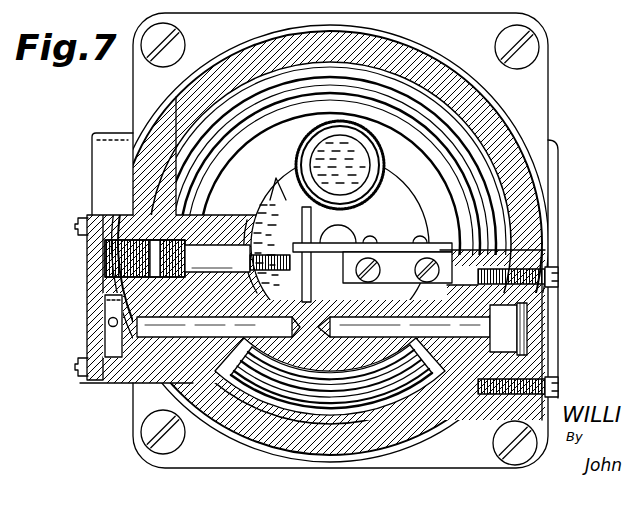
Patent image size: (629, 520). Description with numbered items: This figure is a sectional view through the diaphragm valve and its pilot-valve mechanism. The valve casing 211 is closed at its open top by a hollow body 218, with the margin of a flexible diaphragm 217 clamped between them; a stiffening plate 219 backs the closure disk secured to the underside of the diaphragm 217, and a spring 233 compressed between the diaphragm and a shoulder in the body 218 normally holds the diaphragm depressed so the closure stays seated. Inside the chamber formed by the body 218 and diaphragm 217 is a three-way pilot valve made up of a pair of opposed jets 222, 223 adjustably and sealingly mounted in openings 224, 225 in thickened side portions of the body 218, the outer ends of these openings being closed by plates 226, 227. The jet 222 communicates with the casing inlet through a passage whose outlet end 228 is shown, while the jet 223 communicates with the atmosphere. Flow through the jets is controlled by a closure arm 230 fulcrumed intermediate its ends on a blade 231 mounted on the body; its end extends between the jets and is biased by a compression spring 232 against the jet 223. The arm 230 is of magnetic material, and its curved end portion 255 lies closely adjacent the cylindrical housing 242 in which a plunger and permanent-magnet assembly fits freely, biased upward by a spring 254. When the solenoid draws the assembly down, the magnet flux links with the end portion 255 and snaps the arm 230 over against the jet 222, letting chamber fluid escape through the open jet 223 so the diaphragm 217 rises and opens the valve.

The valve casing 211 is at (538, 109).
The flexible diaphragm 217 is at (467, 148).
The hollow body 218 is at (476, 100).
The stiffening plate 219 is at (440, 224).
The jet 222 is at (265, 400).
The jet 223 is at (285, 438).
The opening 224 is at (107, 303).
The opening 225 is at (517, 306).
The plate 226 is at (97, 345).
The plate 227 is at (528, 349).
The passage outlet end 228 is at (108, 322).
The closure arm 230 is at (310, 268).
The blade 231 is at (405, 243).
The compression spring 232 is at (266, 268).
The spring 233 is at (217, 163).
The cylindrical housing 242 is at (352, 157).
The spring 254 is at (366, 226).
The curved end portion 255 is at (262, 199).